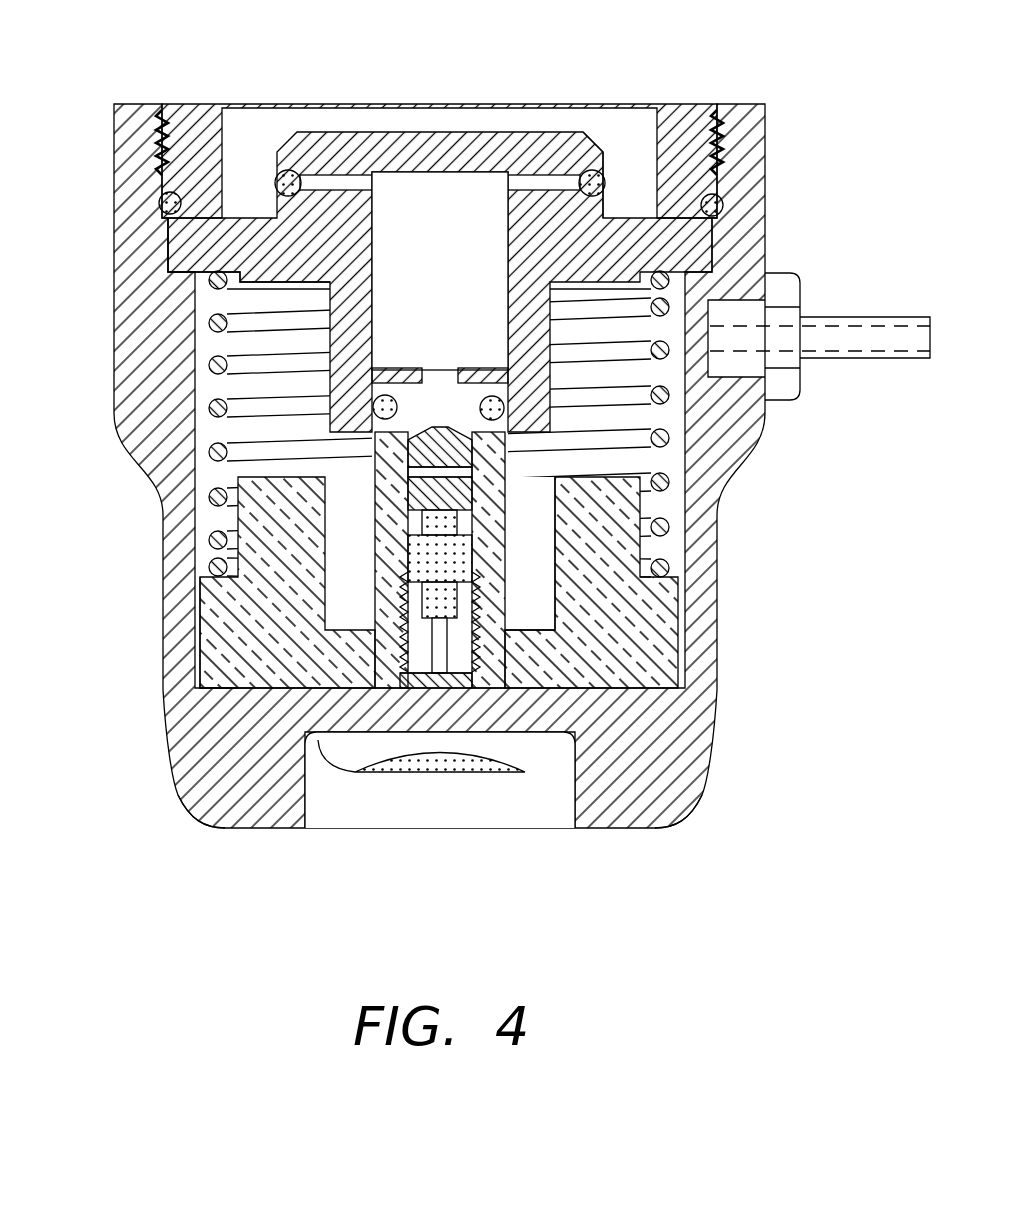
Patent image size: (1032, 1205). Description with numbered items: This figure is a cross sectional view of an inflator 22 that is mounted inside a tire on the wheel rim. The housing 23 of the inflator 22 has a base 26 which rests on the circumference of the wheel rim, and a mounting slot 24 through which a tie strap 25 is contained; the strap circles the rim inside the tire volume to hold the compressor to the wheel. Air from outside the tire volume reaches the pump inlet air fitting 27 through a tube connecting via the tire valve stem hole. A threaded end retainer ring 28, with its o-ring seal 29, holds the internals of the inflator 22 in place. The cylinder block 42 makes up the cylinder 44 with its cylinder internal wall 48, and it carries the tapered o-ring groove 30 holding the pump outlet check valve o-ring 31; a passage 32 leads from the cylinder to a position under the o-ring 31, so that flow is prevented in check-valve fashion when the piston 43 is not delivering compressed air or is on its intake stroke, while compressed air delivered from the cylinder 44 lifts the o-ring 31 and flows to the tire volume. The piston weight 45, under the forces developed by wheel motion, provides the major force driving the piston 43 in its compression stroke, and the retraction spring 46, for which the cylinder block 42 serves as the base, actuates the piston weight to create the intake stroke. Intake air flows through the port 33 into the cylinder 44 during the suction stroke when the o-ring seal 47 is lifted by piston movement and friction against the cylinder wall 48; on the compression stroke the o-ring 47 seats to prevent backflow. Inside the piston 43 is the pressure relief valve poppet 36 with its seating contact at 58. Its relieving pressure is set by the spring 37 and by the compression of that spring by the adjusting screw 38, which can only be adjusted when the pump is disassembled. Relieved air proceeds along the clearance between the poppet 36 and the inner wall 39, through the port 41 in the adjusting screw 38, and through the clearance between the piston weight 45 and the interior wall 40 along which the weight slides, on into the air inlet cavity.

The inflator 22 is at (178, 836).
The housing 23 is at (165, 560).
The mounting slot 24 is at (548, 747).
The tie strap 25 is at (457, 778).
The base 26 is at (657, 803).
The pump inlet air fitting 27 is at (882, 318).
The threaded end retainer ring 28 is at (193, 105).
The o-ring seal 29 is at (725, 198).
The tapered o-ring groove 30 is at (315, 180).
The pump outlet check valve o-ring 31 is at (600, 170).
The passage 32 is at (535, 143).
The port 33 is at (418, 368).
The pressure relief valve poppet 36 is at (470, 497).
The spring 37 is at (432, 563).
The adjusting screw 38 is at (490, 648).
The inner wall 39 is at (400, 487).
The interior wall 40 is at (200, 652).
The port 41 is at (437, 680).
The cylinder block 42 is at (355, 132).
The piston 43 is at (505, 602).
The cylinder 44 is at (447, 187).
The piston weight 45 is at (247, 670).
The retraction spring 46 is at (210, 367).
The o-ring seal 47 is at (500, 410).
The cylinder internal wall 48 is at (372, 297).
The seating contact 58 is at (440, 420).